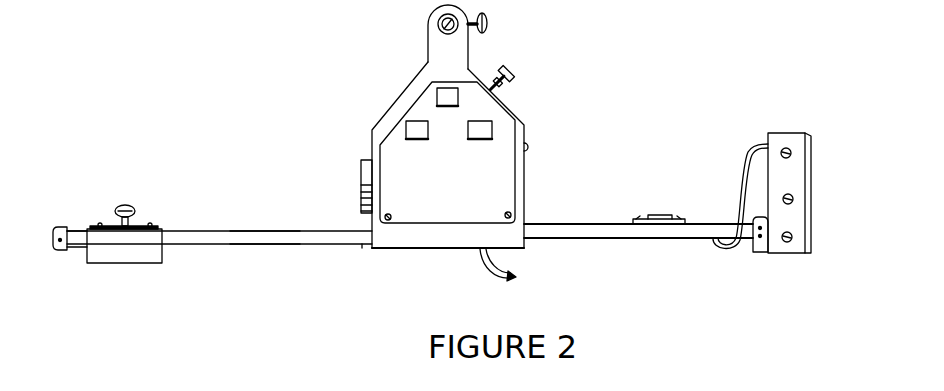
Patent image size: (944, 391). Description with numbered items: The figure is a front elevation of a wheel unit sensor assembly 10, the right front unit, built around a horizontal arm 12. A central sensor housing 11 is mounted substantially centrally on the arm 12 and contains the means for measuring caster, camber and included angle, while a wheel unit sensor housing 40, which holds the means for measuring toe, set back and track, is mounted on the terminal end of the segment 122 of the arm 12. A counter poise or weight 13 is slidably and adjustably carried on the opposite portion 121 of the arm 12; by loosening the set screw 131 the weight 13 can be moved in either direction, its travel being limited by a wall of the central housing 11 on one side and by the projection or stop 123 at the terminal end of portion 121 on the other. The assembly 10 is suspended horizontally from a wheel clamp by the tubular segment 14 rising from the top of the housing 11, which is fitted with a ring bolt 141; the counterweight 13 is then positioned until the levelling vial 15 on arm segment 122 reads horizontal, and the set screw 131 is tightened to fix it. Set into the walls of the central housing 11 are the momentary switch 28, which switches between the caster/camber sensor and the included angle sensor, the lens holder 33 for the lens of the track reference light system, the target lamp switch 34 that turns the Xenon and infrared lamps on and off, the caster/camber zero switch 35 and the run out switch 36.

The wheel unit sensor assembly 10 is at (233, 230).
The central sensor housing 11 is at (525, 201).
The arm 12 is at (362, 245).
The portion of arm 121 is at (273, 246).
The segment of arm 122 is at (664, 238).
The projection or stop 123 is at (63, 251).
The counter poise or weight 13 is at (150, 264).
The set screw 131 is at (133, 208).
The tubular segment 14 is at (440, 31).
The ring bolt 141 is at (487, 25).
The levelling vial 15 is at (660, 217).
The momentary switch 28 is at (512, 79).
The lens holder 33 is at (367, 160).
The target lamp switch 34 is at (420, 124).
The caster/camber zero switch 35 is at (487, 130).
The run out switch 36 is at (450, 97).
The wheel unit sensor housing 40 is at (811, 254).